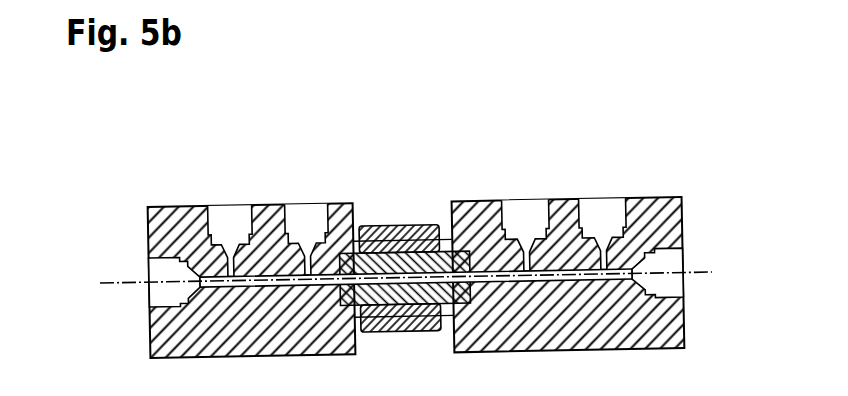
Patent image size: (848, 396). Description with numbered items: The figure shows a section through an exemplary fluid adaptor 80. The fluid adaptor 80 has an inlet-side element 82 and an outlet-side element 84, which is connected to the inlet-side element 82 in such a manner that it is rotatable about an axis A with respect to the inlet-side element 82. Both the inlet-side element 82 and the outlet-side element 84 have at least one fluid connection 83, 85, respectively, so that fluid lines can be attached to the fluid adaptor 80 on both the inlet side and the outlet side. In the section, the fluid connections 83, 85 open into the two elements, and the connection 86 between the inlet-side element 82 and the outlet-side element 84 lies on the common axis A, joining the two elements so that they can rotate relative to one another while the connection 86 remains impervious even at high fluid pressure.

The fluid adaptor 80 is at (416, 222).
The inlet-side element 82 is at (484, 210).
The fluid connection 83 is at (527, 178).
The outlet-side element 84 is at (185, 212).
The fluid connection 85 is at (233, 180).
The connection 86 is at (402, 212).